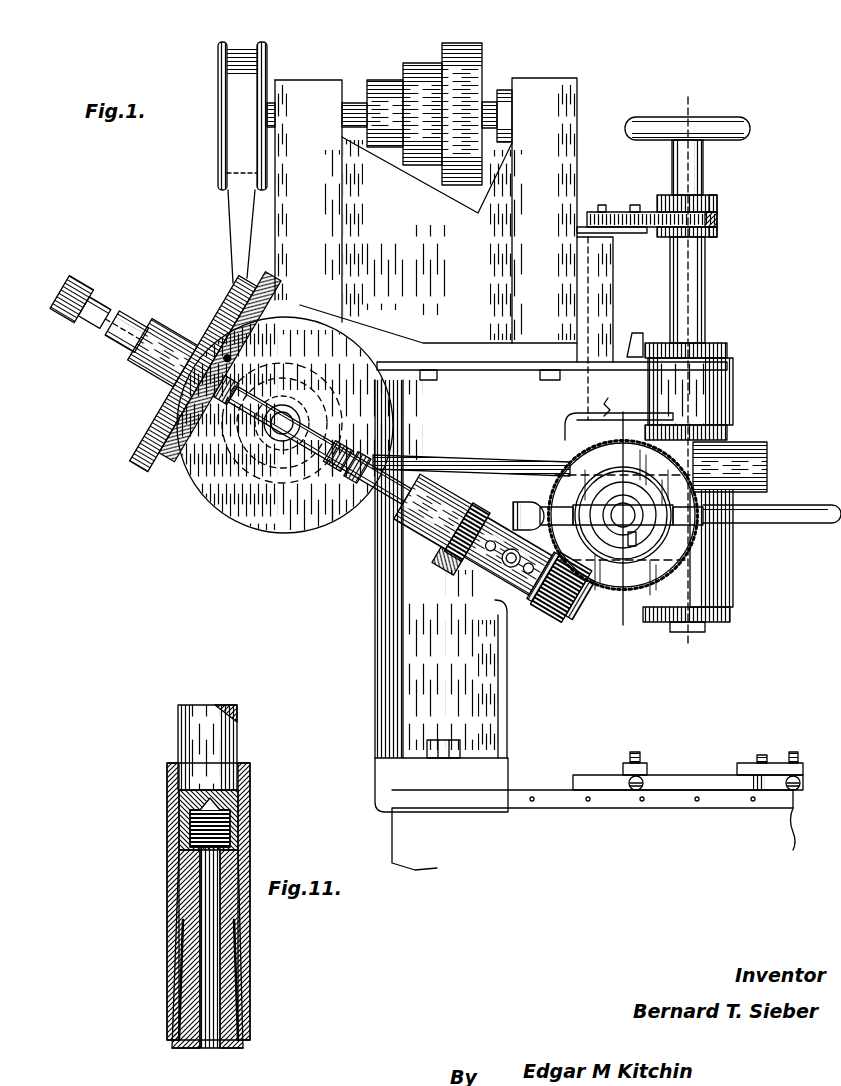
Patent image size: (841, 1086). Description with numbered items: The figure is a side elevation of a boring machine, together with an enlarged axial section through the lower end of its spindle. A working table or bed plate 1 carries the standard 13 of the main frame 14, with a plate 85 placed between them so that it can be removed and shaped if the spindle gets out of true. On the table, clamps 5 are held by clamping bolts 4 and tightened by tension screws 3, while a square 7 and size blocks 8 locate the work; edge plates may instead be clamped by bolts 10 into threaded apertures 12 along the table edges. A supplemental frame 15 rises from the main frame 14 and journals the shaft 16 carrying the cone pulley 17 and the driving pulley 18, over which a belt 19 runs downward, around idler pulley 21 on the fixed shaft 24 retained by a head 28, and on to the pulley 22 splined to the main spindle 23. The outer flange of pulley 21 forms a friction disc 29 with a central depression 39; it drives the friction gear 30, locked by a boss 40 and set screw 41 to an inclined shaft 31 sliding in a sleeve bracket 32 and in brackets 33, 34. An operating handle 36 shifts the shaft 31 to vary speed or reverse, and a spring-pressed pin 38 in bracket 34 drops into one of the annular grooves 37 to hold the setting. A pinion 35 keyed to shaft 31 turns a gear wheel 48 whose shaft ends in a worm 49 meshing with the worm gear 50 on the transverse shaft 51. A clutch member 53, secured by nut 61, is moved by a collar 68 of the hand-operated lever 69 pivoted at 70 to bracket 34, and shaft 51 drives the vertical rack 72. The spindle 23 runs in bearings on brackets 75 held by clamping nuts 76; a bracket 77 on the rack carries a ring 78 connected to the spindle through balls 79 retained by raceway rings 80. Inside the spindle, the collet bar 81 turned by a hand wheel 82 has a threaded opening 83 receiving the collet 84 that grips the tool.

In FIG. 1, the working table or bed plate 1 is at (525, 792).
In FIG. 1, the tension screw 3 is at (640, 760).
In FIG. 1, the clamping bolt 4 is at (684, 572).
In FIG. 1, the clamp 5 is at (648, 768).
In FIG. 1, the square 7 is at (695, 784).
In FIG. 1, the size block 8 is at (799, 760).
In FIG. 1, the bolt 10 is at (522, 563).
In FIG. 1, the threaded aperture 12 is at (752, 802).
In FIG. 1, the standard 13 is at (405, 648).
In FIG. 1, the main frame 14 is at (550, 419).
In FIG. 1, the supplemental frame 15 is at (426, 210).
In FIG. 1, the shaft 16 is at (352, 100).
In FIG. 1, the cone pulley 17 is at (447, 62).
In FIG. 1, the driving pulley 18 is at (268, 60).
In FIG. 1, the belt 19 is at (237, 233).
In FIG. 1, the idler pulley 21 is at (319, 443).
In FIG. 1, the pulley 22 is at (766, 455).
In FIG. 1, the main spindle 23 is at (706, 305).
In FIG. 11, the main spindle 23 is at (168, 802).
In FIG. 1, the shaft 24 is at (282, 430).
In FIG. 1, the head 28 is at (283, 414).
In FIG. 1, the friction disc 29 is at (362, 376).
In FIG. 1, the friction gear 30 is at (135, 472).
In FIG. 1, the shaft 31 is at (342, 440).
In FIG. 1, the sleeve bracket 32 is at (150, 378).
In FIG. 1, the bracket 33 is at (428, 535).
In FIG. 1, the bracket 34 is at (482, 580).
In FIG. 1, the pinion 35 is at (443, 570).
In FIG. 1, the operating handle 36 is at (560, 610).
In FIG. 1, the annular groove 37 is at (355, 472).
In FIG. 1, the spring-pressed pin 38 is at (516, 597).
In FIG. 1, the depression or recess 39 is at (262, 470).
In FIG. 1, the boss 40 is at (240, 368).
In FIG. 1, the set screw 41 is at (232, 356).
In FIG. 1, the gear wheel 48 is at (490, 478).
In FIG. 1, the worm 49 is at (575, 622).
In FIG. 1, the worm gear 50 is at (668, 556).
In FIG. 1, the transverse shaft 51 is at (607, 538).
In FIG. 1, the clutch member 53 is at (640, 548).
In FIG. 1, the nut 61 is at (600, 508).
In FIG. 1, the collar 68 is at (633, 497).
In FIG. 1, the hand-operated lever 69 is at (786, 505).
In FIG. 1, the pivot 70 is at (524, 500).
In FIG. 1, the vertical rack 72 is at (590, 358).
In FIG. 1, the bracket 75 is at (733, 398).
In FIG. 1, the clamping nut 76 is at (728, 352).
In FIG. 1, the bracket 77 is at (613, 212).
In FIG. 1, the ring 78 is at (718, 222).
In FIG. 1, the ball bearing 79 is at (718, 210).
In FIG. 1, the raceway ring 80 is at (705, 198).
In FIG. 11, the collet bar 81 is at (180, 742).
In FIG. 1, the hand wheel 82 is at (720, 118).
In FIG. 11, the threaded opening 83 is at (232, 826).
In FIG. 11, the collet 84 is at (180, 1006).
In FIG. 1, the plate 85 is at (470, 790).